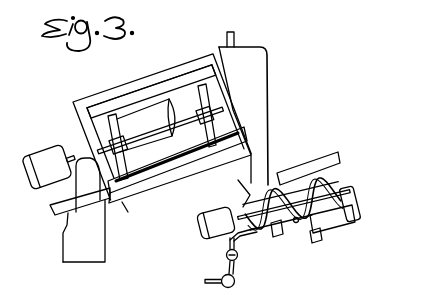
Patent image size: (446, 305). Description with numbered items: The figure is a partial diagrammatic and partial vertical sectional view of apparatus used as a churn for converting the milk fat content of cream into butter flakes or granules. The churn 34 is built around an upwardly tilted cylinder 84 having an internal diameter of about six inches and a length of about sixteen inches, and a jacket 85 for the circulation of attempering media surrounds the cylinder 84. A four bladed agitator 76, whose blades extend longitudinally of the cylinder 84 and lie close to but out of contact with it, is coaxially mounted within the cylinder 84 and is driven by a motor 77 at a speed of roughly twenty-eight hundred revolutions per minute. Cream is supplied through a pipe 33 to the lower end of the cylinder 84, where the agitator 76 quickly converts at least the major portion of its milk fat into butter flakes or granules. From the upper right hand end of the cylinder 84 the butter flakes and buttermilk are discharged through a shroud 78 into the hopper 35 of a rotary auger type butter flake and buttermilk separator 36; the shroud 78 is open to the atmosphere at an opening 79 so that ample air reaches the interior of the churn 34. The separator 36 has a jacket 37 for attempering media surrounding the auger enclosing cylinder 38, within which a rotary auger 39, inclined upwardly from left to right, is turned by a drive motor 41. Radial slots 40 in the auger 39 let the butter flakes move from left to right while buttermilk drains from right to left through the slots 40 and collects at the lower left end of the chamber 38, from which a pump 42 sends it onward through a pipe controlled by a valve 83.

The pipe 33 is at (50, 211).
The churn 34 is at (127, 84).
The hopper 35 is at (279, 181).
The butter flake and buttermilk separator 36 is at (242, 196).
The jacket 37 is at (322, 160).
The auger enclosing cylinder 38 is at (298, 222).
The rotary auger 39 is at (349, 181).
The radial slots 40 is at (278, 236).
The drive motor 41 is at (205, 213).
The pump 42 is at (220, 273).
The four bladed agitator 76 is at (187, 162).
The motor 77 is at (45, 143).
The shroud 78 is at (268, 72).
The atmospheric opening 79 is at (233, 40).
The valve 83 is at (239, 259).
The cylinder 84 is at (94, 101).
The jacket 85 is at (177, 64).